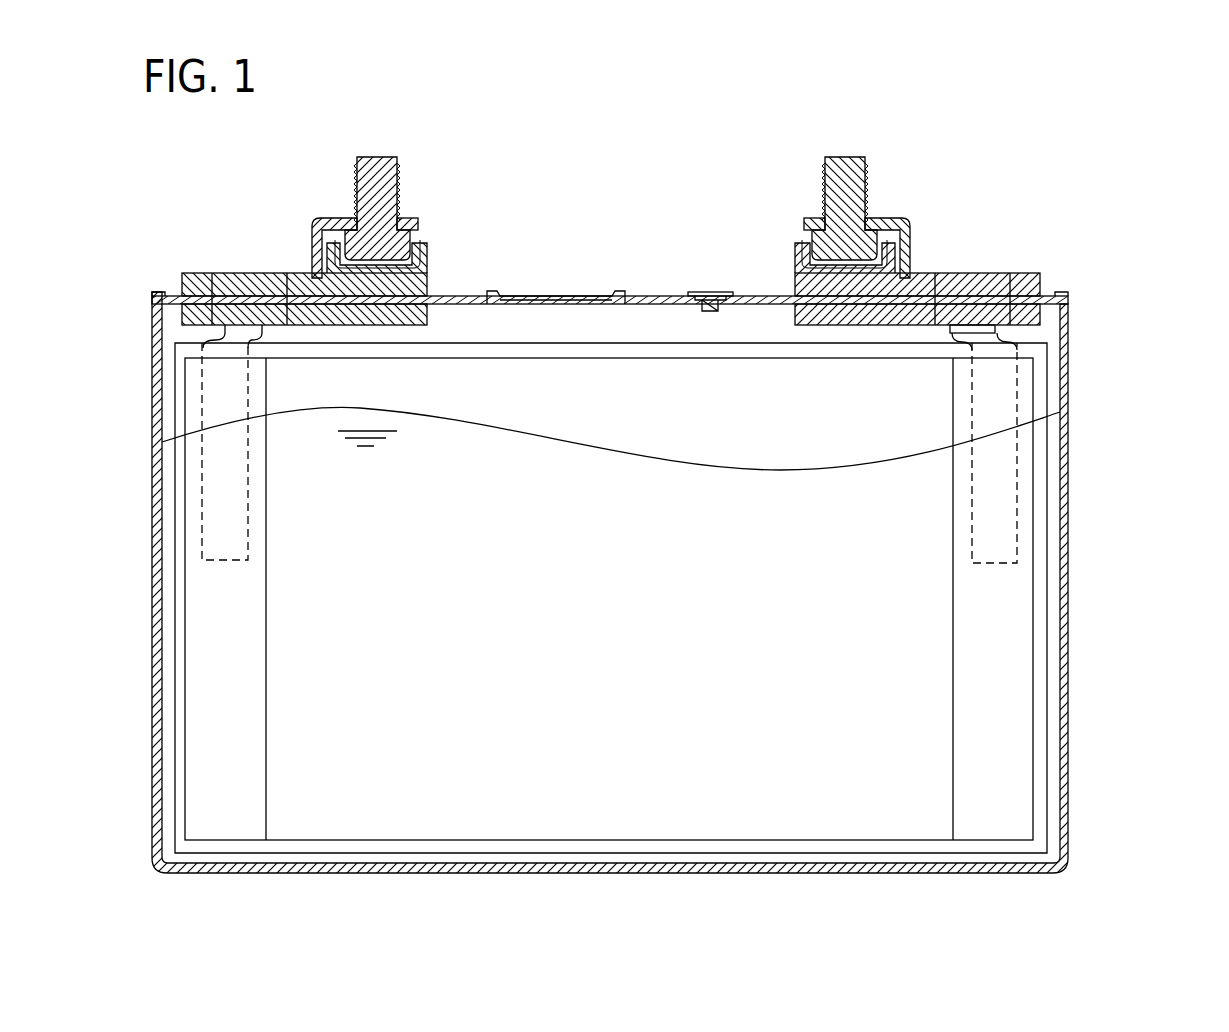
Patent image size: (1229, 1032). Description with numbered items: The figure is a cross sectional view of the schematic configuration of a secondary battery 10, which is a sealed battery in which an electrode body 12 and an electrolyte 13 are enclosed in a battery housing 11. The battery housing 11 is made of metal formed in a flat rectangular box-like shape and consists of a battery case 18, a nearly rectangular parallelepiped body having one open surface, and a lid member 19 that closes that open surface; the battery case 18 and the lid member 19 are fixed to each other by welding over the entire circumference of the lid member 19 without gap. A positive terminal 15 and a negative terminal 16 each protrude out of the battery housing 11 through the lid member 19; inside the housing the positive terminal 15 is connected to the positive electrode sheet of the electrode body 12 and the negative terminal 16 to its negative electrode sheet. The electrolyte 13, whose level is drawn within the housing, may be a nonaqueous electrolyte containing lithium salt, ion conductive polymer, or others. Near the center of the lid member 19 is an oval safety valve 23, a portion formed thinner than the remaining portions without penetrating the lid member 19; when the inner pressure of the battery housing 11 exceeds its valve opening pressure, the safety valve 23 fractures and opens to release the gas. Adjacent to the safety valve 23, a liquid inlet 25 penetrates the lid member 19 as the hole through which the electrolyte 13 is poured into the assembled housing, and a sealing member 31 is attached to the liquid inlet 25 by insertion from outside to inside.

The secondary battery 10 is at (729, 201).
The battery housing 11 is at (1147, 285).
The electrode body 12 is at (646, 423).
The electrolyte 13 is at (1053, 422).
The positive terminal 15 is at (378, 160).
The negative terminal 16 is at (845, 162).
The battery case 18 is at (1068, 350).
The lid member 19 is at (1068, 297).
The safety valve 23 is at (558, 294).
The liquid inlet 25 is at (712, 305).
The sealing member 31 is at (713, 295).